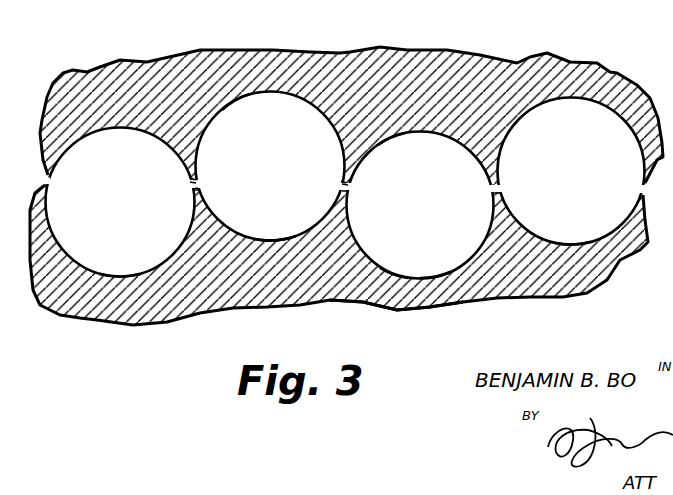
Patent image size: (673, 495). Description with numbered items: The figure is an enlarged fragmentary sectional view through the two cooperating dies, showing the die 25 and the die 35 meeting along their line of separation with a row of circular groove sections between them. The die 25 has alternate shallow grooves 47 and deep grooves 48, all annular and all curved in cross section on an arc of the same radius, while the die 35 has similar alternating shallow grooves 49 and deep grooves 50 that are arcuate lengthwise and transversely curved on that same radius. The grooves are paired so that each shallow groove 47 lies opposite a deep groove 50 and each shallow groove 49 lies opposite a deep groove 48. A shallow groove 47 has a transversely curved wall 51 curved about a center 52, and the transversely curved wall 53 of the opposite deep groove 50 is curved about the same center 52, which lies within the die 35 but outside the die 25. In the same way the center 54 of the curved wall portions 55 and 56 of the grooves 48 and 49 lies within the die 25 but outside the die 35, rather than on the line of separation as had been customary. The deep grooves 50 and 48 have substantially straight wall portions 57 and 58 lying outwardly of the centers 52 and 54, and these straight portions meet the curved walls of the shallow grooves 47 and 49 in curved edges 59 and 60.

The die 35 is at (400, 55).
The shallow grooves 49 is at (120, 132).
The deep grooves 50 is at (272, 92).
The shallow grooves 47 is at (268, 241).
The deep grooves 48 is at (118, 277).
The die 25 is at (363, 300).
The transversely curved wall 51 is at (287, 238).
The center 52 is at (270, 165).
The transversely curved wall 53 is at (238, 96).
The center 54 is at (418, 207).
The transversely curved wall portion 55 is at (393, 278).
The transversely curved wall portion 56 is at (390, 137).
The straight wall portions 57 is at (193, 176).
The straight wall portions 58 is at (46, 187).
The curved edges 59 is at (195, 187).
The curved edges 60 is at (193, 183).